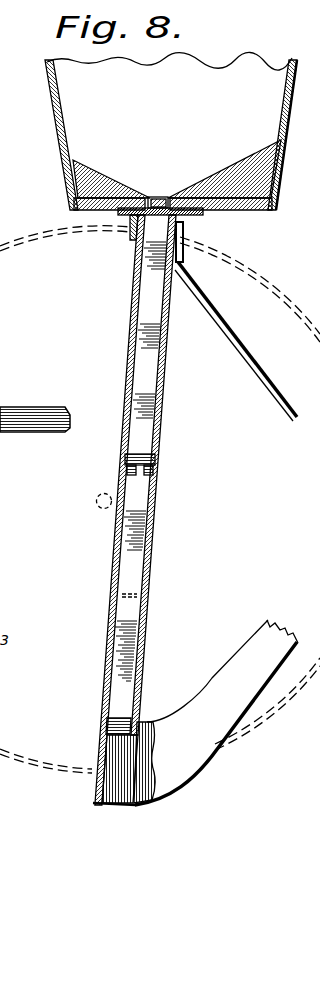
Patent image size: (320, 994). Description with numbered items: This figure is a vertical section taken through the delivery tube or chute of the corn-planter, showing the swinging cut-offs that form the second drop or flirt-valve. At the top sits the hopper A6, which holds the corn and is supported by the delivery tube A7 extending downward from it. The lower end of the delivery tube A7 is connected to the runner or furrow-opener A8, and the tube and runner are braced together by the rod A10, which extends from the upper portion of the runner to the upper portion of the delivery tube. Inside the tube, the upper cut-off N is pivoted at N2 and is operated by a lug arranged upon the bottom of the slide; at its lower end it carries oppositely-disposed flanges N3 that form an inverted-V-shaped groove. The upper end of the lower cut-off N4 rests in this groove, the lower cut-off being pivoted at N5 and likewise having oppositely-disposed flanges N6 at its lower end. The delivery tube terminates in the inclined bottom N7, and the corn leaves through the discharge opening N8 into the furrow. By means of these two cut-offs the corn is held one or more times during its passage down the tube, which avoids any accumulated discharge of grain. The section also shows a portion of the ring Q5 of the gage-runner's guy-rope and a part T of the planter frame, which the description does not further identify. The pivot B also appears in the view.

The hopper A6 is at (171, 133).
The upper cut-off N is at (150, 296).
The delivery tube A7 is at (132, 342).
The pivot of upper cut-off N2 is at (150, 345).
The brace rod A10 is at (248, 352).
The table T is at (24, 416).
The flanges of upper cut-off N3 is at (128, 462).
The pivot pin B is at (97, 501).
The lower cut-off N4 is at (128, 558).
The pivot of lower cut-off N5 is at (152, 583).
The runner or furrow-opener A8 is at (247, 647).
The flanges of lower cut-off N6 is at (112, 722).
The discharge opening N8 is at (133, 770).
The inclined bottom of delivery tube N7 is at (137, 804).
The ring Q5 is at (13, 709).